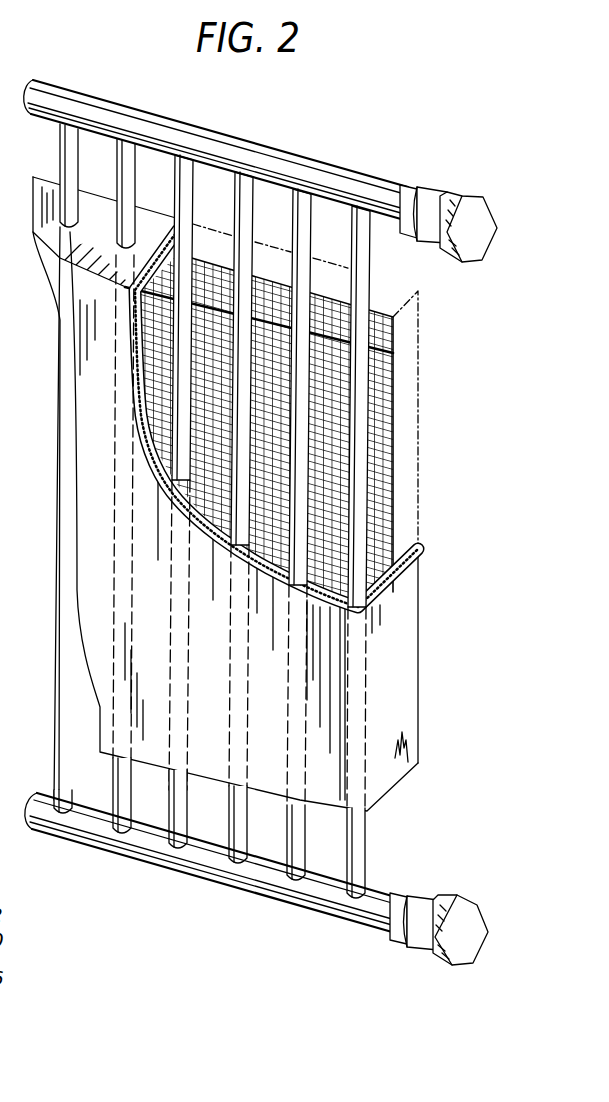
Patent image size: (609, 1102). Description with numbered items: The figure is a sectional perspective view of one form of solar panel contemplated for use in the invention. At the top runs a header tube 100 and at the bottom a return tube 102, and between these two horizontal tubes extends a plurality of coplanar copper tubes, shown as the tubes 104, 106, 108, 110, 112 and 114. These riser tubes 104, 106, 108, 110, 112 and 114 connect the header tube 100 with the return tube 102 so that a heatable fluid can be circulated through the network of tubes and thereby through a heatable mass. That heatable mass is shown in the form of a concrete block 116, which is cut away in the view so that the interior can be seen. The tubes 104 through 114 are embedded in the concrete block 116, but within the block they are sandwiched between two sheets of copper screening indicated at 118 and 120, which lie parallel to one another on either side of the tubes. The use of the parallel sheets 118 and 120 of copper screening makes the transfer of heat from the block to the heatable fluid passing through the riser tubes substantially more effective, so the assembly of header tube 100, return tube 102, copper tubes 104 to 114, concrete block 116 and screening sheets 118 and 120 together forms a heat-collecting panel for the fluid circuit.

The header tube 100 is at (231, 139).
The return tube 102 is at (203, 868).
The copper tube 104 is at (61, 158).
The copper tube 106 is at (118, 173).
The copper tube 108 is at (178, 197).
The copper tube 110 is at (242, 212).
The copper tube 112 is at (301, 241).
The copper tube 114 is at (354, 247).
The concrete block 116 is at (103, 708).
The sheet of copper screening 118 is at (418, 342).
The sheet of copper screening 120 is at (128, 291).